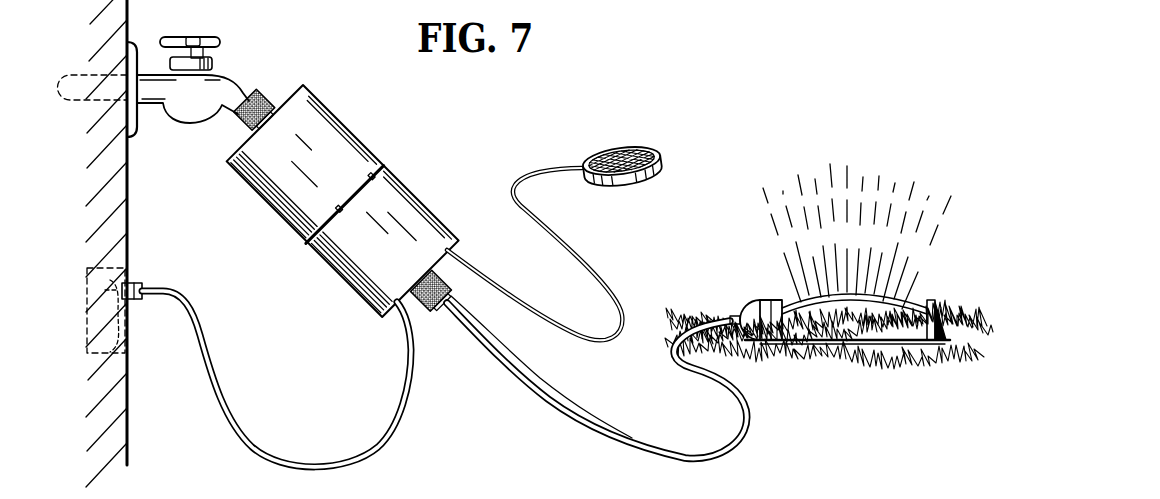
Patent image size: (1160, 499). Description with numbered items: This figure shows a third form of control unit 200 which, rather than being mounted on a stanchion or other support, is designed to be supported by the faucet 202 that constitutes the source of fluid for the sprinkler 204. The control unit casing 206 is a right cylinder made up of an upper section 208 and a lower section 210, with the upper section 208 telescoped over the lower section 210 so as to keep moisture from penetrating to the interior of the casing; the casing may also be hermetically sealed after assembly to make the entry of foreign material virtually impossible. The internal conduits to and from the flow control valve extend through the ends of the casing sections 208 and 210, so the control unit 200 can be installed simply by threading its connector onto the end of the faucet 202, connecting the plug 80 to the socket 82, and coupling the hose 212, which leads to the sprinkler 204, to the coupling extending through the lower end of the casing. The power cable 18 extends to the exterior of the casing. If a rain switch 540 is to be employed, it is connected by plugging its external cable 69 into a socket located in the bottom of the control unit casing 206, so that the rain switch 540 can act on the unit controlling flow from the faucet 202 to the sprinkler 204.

The faucet 202 is at (204, 101).
The control unit 200 is at (290, 228).
The control unit casing 206 is at (346, 113).
The upper section 208 is at (317, 157).
The lower section 210 is at (410, 250).
The power cable 18 is at (407, 357).
The hose 212 is at (550, 400).
The external cable 69 is at (585, 260).
The rain switch 540 is at (676, 157).
The sprinkler 204 is at (760, 290).
The plug 80 is at (143, 286).
The socket 82 is at (120, 260).